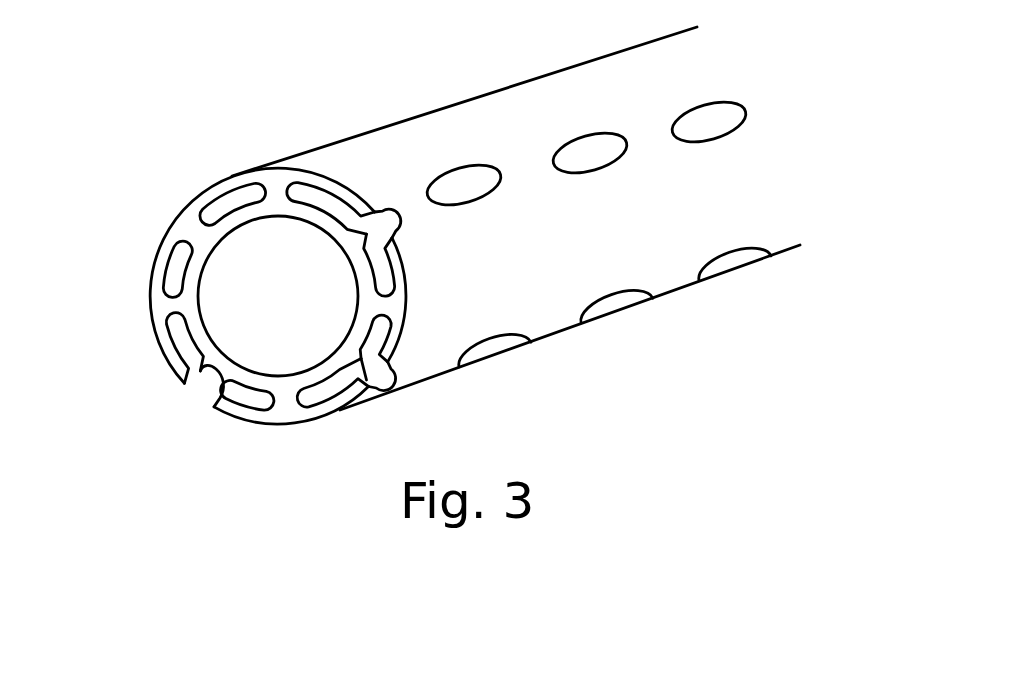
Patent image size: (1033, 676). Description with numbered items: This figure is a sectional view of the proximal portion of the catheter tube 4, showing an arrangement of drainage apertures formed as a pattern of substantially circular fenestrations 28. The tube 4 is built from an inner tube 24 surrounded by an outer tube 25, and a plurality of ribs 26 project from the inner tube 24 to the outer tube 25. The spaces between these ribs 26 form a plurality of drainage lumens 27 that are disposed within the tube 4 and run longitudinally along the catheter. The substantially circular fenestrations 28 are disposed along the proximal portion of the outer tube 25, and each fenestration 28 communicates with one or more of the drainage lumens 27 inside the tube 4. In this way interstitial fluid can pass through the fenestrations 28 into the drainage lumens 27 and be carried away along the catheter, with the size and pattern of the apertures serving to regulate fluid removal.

The tube 4 is at (501, 88).
The inner tube 24 is at (337, 233).
The outer tube 25 is at (165, 248).
The ribs 26 is at (273, 185).
The drainage lumens 27 is at (325, 200).
The substantially circular fenestrations 28 is at (473, 186).